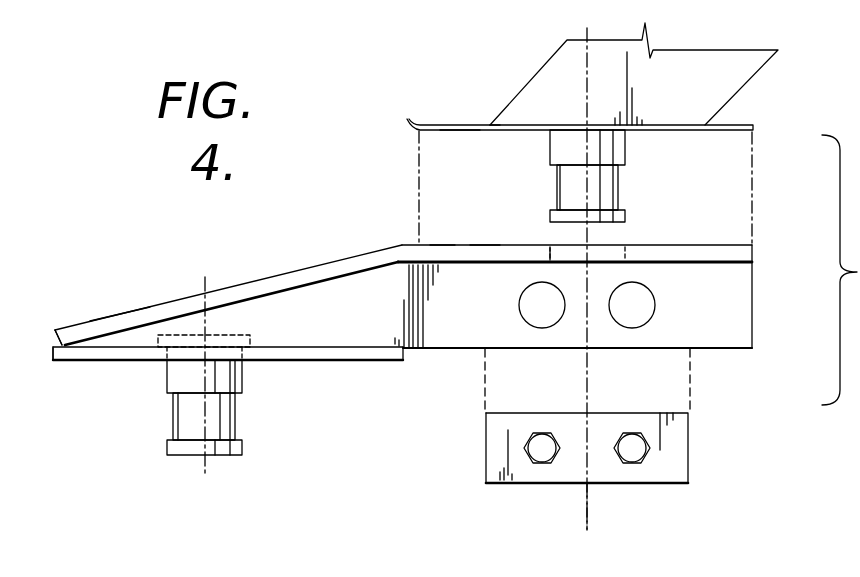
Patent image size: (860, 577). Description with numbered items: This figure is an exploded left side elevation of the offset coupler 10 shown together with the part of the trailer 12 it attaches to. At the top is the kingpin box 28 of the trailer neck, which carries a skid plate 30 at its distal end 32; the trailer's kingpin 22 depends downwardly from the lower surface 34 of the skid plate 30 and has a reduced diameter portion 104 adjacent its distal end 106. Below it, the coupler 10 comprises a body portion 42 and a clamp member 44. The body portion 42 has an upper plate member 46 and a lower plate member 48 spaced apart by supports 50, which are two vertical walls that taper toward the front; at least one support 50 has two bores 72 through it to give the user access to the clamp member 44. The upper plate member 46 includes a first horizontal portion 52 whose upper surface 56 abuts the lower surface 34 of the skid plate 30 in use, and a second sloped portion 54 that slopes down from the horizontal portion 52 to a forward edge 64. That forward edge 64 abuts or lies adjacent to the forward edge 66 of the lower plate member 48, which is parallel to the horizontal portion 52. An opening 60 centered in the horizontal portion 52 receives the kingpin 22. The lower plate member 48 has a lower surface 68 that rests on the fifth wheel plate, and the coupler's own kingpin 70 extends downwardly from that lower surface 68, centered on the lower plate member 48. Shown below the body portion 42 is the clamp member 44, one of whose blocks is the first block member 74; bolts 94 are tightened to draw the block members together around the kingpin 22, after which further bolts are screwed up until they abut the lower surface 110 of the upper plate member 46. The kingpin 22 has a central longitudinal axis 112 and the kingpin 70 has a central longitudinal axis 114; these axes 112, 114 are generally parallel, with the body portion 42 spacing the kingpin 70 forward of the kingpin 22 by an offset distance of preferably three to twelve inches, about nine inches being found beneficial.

The offset coupler 10 is at (292, 280).
The trailer 12 is at (551, 60).
The kingpin 22 is at (615, 152).
The kingpin box 28 is at (747, 67).
The skid plate 30 is at (433, 122).
The distal end 32 is at (505, 124).
The lower surface 34 is at (470, 132).
The body portion 42 is at (365, 342).
The clamp member 44 is at (682, 458).
The upper plate member 46 is at (752, 254).
The lower plate member 48 is at (290, 357).
The supports 50 is at (448, 342).
The first horizontal portion 52 is at (477, 253).
The second sloped portion 54 is at (118, 317).
The upper surface 56 is at (442, 245).
The opening 60 is at (550, 257).
The forward edge 64 is at (53, 340).
The forward edge 66 is at (53, 352).
The lower surface 68 is at (98, 370).
The kingpin 70 is at (173, 382).
The bores 72 is at (527, 296).
The first block member 74 is at (488, 460).
The bolts 94 is at (542, 455).
The reduced diameter portion 104 is at (557, 190).
The distal end 106 is at (610, 222).
The lower surface 110 is at (672, 268).
The central longitudinal axis 112 is at (588, 513).
The central longitudinal axis 114 is at (205, 467).